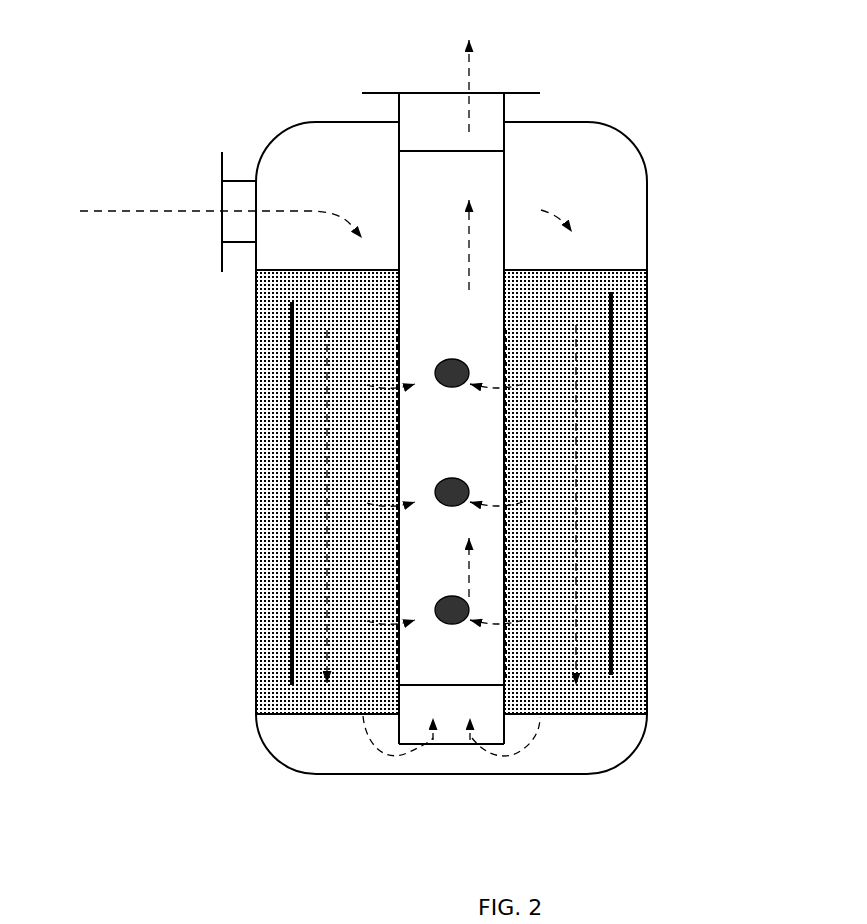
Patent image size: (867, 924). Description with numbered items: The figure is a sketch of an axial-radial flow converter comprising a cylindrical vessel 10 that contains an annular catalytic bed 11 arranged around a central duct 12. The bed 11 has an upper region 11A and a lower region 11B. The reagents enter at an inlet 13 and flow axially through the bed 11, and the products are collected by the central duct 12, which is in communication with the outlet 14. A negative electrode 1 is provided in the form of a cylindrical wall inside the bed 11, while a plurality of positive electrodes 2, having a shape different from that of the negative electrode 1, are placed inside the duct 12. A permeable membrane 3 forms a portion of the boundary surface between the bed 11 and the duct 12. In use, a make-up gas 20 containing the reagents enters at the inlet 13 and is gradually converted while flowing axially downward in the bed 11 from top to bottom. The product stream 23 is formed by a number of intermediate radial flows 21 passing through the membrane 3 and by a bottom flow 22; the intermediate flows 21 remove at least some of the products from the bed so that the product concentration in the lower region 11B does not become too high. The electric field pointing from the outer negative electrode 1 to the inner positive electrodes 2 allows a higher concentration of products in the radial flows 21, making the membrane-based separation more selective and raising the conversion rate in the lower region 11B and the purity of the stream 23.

The negative electrode 1 is at (613, 482).
The positive electrodes 2 is at (452, 358).
The permeable membrane 3 is at (505, 427).
The cylindrical vessel 10 is at (647, 245).
The annular catalytic bed 11 is at (640, 572).
The upper region 11A is at (636, 301).
The lower region 11B is at (636, 697).
The central duct 12 is at (504, 188).
The inlet 13 is at (238, 187).
The outlet 14 is at (424, 108).
The make-up gas 20 is at (322, 442).
The intermediate radial flows 21 is at (474, 386).
The bottom flow 22 is at (378, 750).
The product stream 23 is at (470, 66).